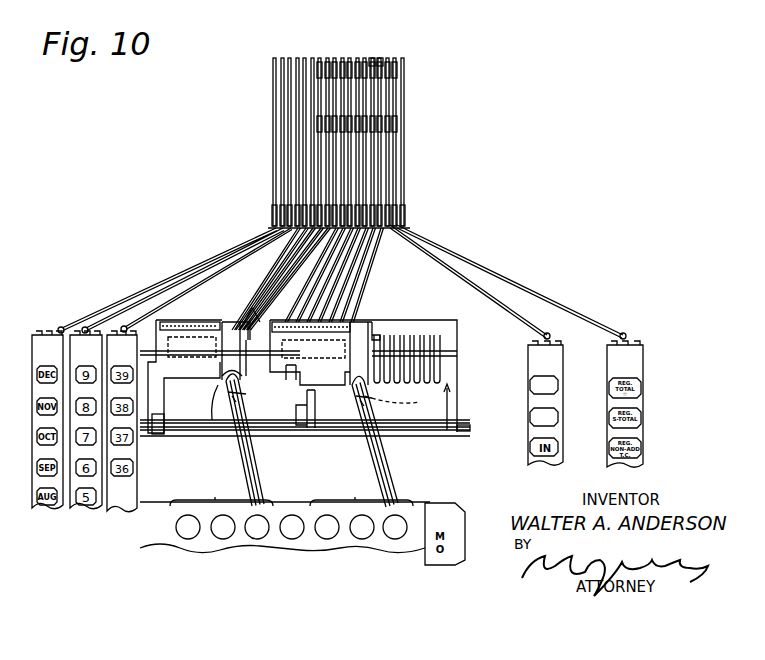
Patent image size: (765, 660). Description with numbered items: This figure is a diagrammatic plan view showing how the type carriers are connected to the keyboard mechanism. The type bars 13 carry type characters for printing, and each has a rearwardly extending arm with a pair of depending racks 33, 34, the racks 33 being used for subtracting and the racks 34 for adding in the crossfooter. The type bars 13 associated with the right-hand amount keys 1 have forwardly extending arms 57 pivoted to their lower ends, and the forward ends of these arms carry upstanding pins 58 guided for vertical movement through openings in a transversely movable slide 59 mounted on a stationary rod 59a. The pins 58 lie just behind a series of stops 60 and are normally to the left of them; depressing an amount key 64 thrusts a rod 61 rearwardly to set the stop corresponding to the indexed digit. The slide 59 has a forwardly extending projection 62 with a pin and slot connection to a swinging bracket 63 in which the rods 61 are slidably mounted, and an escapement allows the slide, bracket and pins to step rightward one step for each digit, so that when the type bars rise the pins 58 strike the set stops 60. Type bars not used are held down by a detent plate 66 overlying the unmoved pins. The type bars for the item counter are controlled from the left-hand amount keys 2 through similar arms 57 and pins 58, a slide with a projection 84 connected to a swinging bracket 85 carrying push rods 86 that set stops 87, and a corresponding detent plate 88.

The amount keys 1 is at (361, 491).
The amount keys 2 is at (221, 491).
The type bars 13 is at (308, 212).
The depending racks 33 is at (380, 130).
The depending racks 34 is at (380, 58).
The forwardly extending arms 57 is at (372, 264).
The upstanding pins 58 is at (220, 322).
The transversely movable slide 59 is at (376, 322).
The stationary rod 59a is at (282, 372).
The stops 60 is at (430, 335).
The rod 61 is at (390, 480).
The forwardly extending projection 62 is at (348, 382).
The swinging bracket 63 is at (388, 455).
The amount keys 64 is at (257, 540).
The detent plate 66 is at (330, 378).
The forwardly extending projection 84 is at (214, 420).
The swinging bracket 85 is at (168, 330).
The push rods 86 is at (248, 452).
The stops 87 is at (250, 322).
The detent plate 88 is at (183, 372).